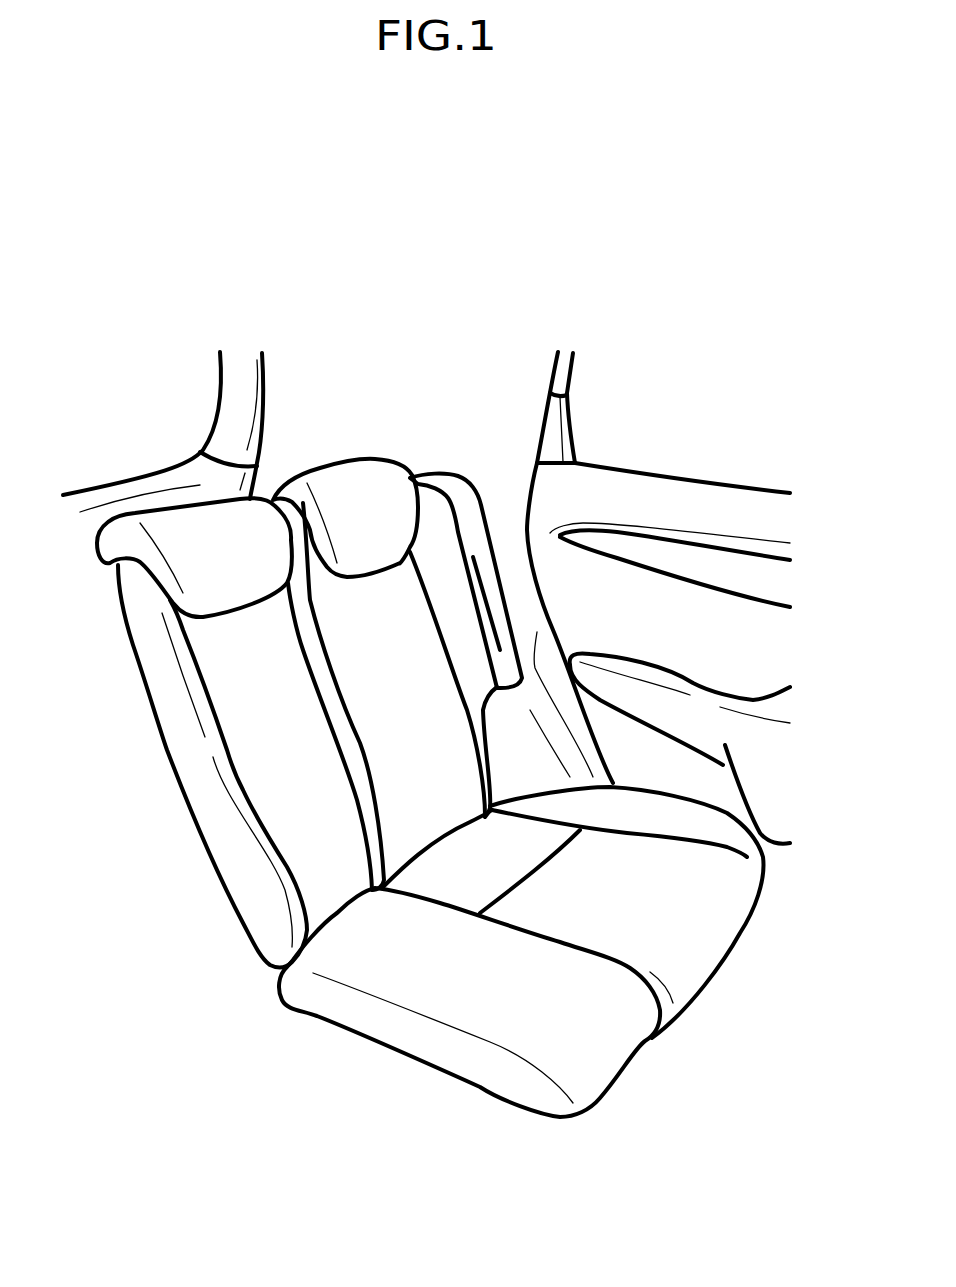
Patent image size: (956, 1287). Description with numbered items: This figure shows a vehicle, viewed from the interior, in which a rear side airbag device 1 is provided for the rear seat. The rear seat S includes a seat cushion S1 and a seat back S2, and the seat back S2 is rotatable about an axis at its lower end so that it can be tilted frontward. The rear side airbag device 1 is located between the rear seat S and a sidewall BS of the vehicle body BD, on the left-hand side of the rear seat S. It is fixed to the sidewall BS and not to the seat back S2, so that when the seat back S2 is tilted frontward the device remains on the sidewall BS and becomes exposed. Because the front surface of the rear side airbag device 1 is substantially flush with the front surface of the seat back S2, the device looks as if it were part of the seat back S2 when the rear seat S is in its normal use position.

The rear seat S is at (453, 724).
The seat cushion S1 is at (710, 932).
The seat back S2 is at (413, 620).
The rear side airbag device 1 is at (500, 608).
The sidewall BS is at (513, 520).
The vehicle body (side door) BD is at (720, 503).